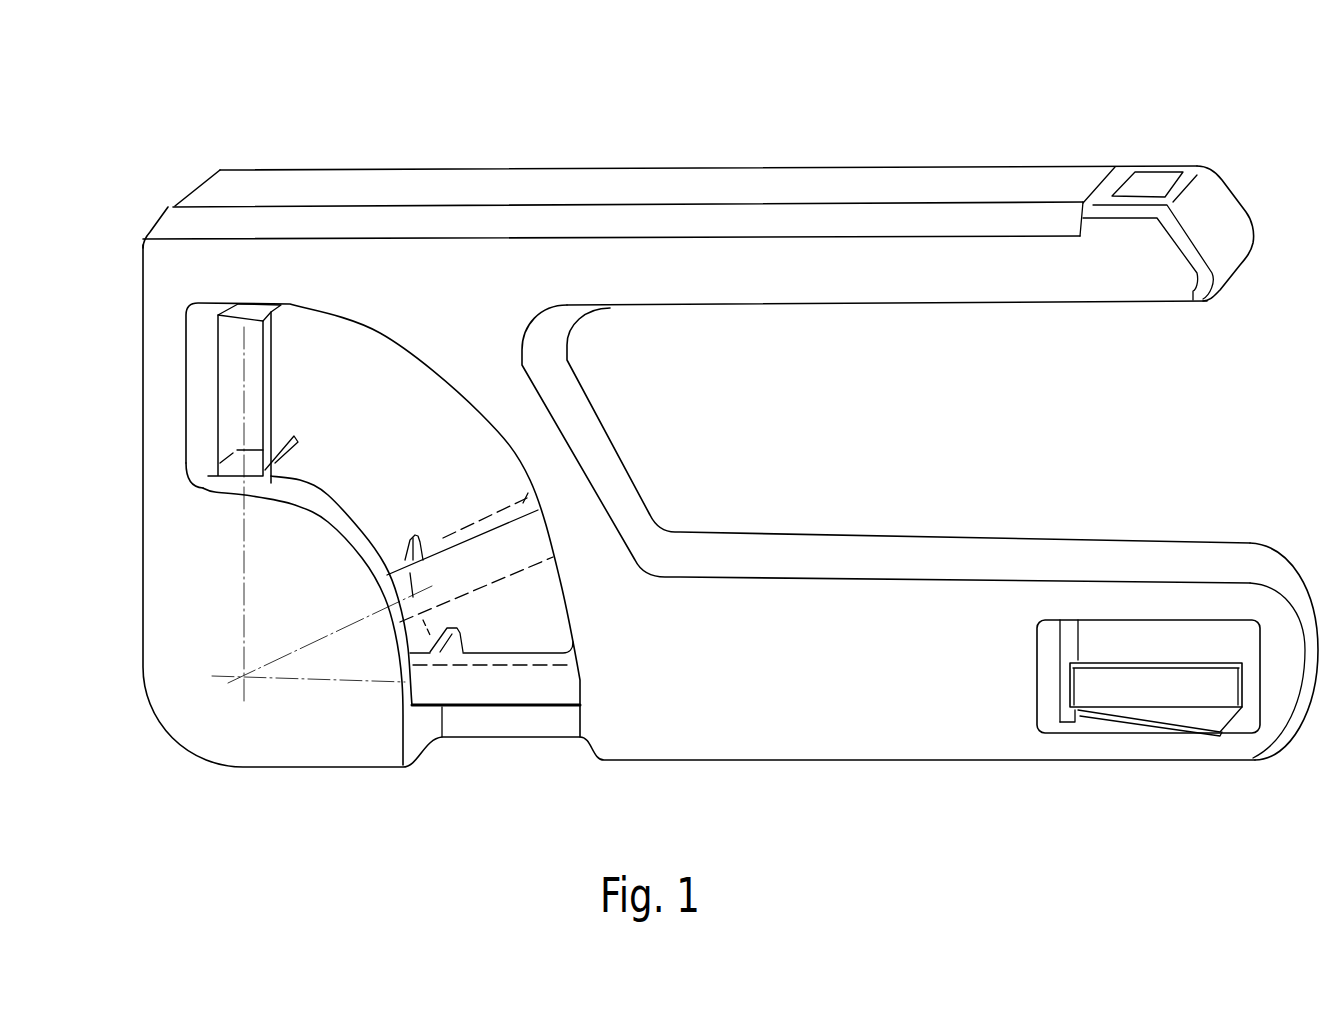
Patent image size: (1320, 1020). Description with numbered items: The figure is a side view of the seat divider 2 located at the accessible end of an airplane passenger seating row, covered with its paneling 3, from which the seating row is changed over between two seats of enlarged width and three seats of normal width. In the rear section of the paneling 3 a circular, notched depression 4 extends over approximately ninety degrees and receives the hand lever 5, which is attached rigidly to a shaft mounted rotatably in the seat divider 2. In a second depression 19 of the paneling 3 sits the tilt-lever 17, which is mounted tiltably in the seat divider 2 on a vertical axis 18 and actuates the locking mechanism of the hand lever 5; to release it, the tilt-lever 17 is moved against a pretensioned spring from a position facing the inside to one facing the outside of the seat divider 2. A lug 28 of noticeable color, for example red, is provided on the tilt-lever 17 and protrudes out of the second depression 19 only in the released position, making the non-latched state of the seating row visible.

The seat divider 2 is at (764, 167).
The paneling 3 is at (867, 277).
The circular, notched depression 4 is at (410, 458).
The hand lever 5 is at (252, 382).
The tilt-lever 17 is at (1127, 685).
The vertical axis 18 is at (1067, 720).
The second depression 19 is at (1172, 652).
The lug 28 is at (1217, 713).